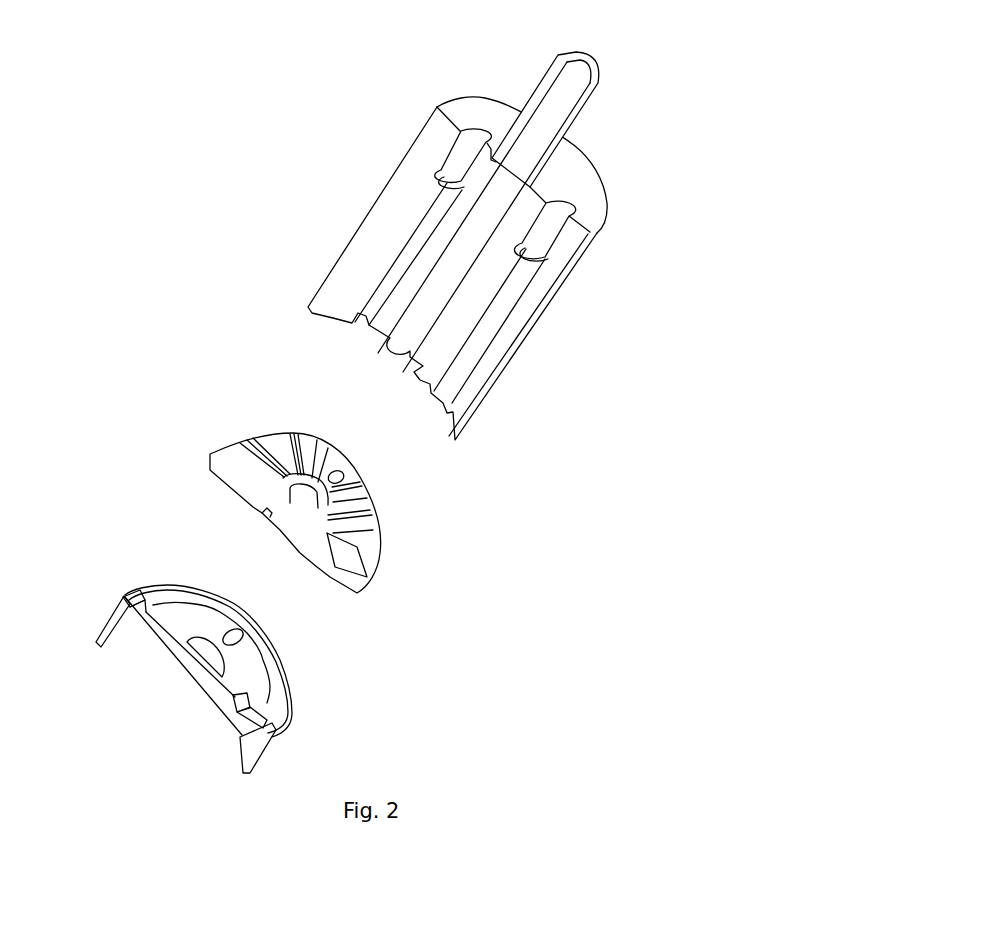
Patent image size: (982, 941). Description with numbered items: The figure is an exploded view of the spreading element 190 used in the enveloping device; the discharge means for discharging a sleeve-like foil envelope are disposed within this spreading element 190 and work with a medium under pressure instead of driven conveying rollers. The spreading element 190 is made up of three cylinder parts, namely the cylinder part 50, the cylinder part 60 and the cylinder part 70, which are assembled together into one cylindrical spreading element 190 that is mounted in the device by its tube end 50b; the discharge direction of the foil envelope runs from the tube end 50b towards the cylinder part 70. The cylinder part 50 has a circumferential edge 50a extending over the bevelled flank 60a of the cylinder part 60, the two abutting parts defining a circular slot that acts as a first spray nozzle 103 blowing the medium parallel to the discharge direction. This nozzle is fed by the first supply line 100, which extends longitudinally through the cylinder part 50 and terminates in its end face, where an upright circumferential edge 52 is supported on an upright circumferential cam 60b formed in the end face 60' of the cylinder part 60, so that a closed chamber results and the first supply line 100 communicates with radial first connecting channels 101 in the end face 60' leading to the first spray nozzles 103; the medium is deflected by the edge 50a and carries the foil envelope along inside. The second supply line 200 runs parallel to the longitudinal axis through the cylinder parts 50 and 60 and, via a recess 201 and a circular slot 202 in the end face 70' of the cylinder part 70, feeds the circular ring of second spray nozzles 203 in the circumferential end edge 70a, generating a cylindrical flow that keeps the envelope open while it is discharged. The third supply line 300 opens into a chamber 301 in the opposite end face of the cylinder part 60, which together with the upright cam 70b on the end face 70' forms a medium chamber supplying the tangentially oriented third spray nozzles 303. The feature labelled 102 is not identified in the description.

The spreading element 190 is at (210, 242).
The cylinder part 50 is at (413, 177).
The circumferential edge 50a is at (313, 300).
The tube end 50b is at (530, 110).
The upright circumferential edge 52 is at (355, 315).
The first supply line 100 is at (405, 250).
The second supply line 200 is at (490, 320).
The third supply line 300 is at (537, 127).
The first connecting channels 101 is at (423, 378).
The radial slot 102 is at (296, 475).
The first spray nozzle 103 is at (290, 478).
The cylinder part 60 is at (270, 477).
The end face 60' is at (422, 503).
The bevelled flank 60a is at (367, 568).
The upright circumferential cam 60b is at (340, 470).
The chamber 301 is at (283, 527).
The third spray nozzles 303 is at (232, 464).
The cylinder part 70 is at (208, 595).
The end face 70' is at (301, 646).
The circumferential end edge 70a is at (100, 640).
The upright cam 70b is at (200, 652).
The recess 201 is at (255, 698).
The circular slot 202 is at (143, 595).
The second spray nozzles 203 is at (123, 632).